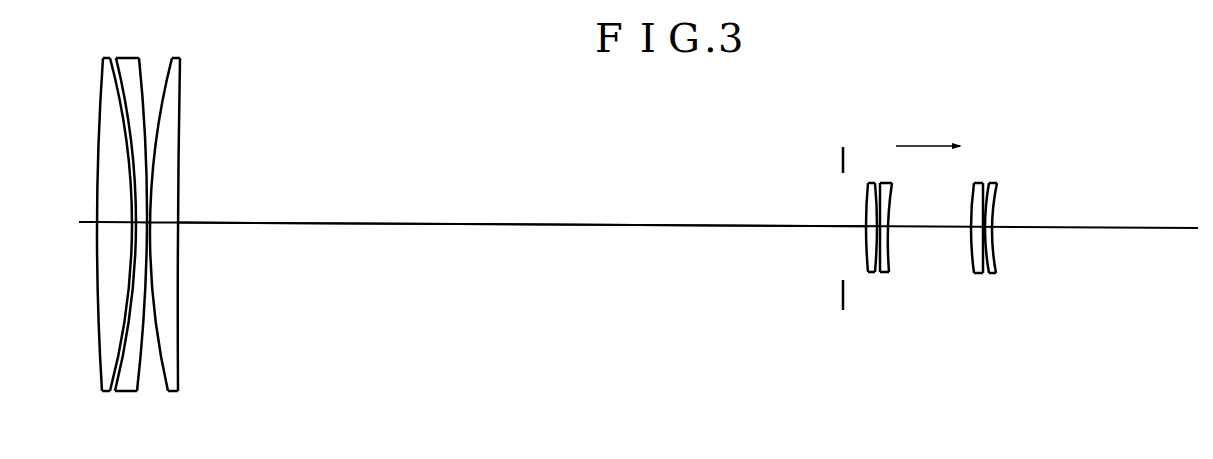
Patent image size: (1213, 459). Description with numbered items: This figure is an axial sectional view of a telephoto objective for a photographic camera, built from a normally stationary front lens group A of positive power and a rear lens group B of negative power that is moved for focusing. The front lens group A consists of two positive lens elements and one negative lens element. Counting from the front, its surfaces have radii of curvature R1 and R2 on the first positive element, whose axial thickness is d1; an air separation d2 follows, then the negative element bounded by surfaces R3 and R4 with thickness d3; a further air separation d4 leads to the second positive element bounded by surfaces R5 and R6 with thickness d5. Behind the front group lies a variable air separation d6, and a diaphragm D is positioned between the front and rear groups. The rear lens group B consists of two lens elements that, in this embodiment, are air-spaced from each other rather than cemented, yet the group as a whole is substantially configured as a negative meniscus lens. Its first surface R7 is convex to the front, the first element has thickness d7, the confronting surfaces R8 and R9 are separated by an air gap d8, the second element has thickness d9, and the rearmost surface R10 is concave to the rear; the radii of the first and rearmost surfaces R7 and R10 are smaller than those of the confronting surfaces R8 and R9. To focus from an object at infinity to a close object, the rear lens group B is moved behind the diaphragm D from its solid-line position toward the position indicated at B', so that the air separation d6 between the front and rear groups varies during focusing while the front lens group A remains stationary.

The front lens group A is at (141, 206).
The rear lens group B is at (921, 149).
The rear lens group in focused position B' is at (972, 149).
The diaphragm D is at (843, 147).
The first refracting surface radius R1 is at (102, 378).
The second refracting surface radius R2 is at (108, 390).
The third refracting surface radius R3 is at (117, 392).
The fourth refracting surface radius R4 is at (138, 392).
The fifth refracting surface radius R5 is at (167, 392).
The sixth refracting surface radius R6 is at (178, 377).
The seventh refracting surface radius R7 is at (866, 260).
The eighth refracting surface radius R8 is at (868, 275).
The ninth refracting surface radius R9 is at (887, 275).
The tenth refracting surface radius R10 is at (889, 266).
The first lens thickness d1 is at (132, 221).
The first air separation d2 is at (133, 221).
The second lens thickness d3 is at (148, 214).
The second air separation d4 is at (150, 218).
The third lens thickness d5 is at (164, 236).
The variable air separation d6 is at (522, 216).
The fourth lens thickness d7 is at (867, 224).
The third air separation d8 is at (878, 223).
The fifth lens thickness d9 is at (886, 224).